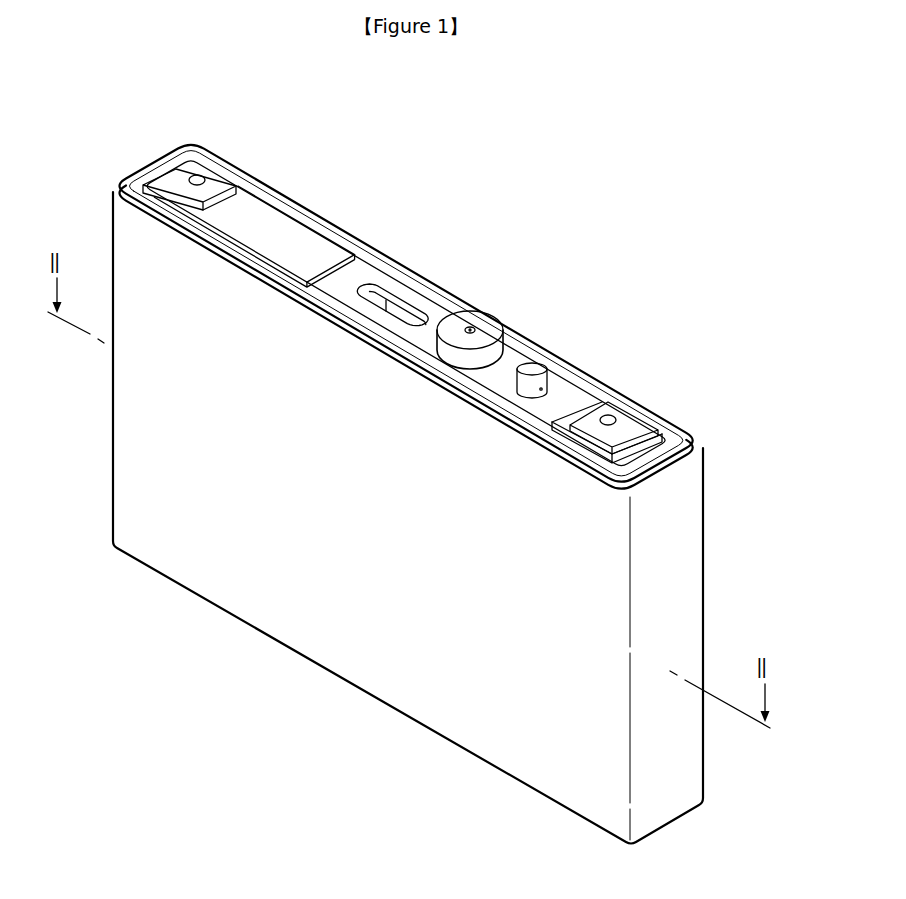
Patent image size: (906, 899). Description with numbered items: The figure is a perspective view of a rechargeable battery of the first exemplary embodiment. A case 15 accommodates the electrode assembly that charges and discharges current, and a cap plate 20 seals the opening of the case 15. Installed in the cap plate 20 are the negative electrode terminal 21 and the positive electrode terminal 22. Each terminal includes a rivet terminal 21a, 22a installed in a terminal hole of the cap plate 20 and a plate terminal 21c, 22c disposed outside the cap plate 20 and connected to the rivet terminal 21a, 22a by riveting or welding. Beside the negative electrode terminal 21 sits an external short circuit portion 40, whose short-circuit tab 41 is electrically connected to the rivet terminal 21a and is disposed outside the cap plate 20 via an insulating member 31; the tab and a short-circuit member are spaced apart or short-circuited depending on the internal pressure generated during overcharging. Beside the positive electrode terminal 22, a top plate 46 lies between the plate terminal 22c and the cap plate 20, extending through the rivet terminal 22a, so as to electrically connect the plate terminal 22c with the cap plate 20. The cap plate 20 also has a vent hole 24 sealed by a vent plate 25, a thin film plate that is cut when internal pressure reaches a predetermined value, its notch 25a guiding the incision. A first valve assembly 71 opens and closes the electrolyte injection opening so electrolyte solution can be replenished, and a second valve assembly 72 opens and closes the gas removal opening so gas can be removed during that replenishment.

The case 15 is at (327, 637).
The cap plate 20 is at (355, 272).
The negative electrode terminal 21 is at (207, 164).
The rivet terminal 21a is at (192, 176).
The plate terminal 21c is at (221, 179).
The positive electrode terminal 22 is at (608, 407).
The rivet terminal 22a is at (616, 418).
The plate terminal 22c is at (624, 428).
The vent hole 24 is at (441, 278).
The vent plate 25 is at (404, 308).
The notch 25a is at (392, 304).
The insulating member 31 is at (267, 202).
The external short circuit portion 40 is at (310, 215).
The short-circuit tab 41 is at (323, 248).
The top plate 46 is at (628, 453).
The first valve assembly 71 is at (500, 315).
The second valve assembly 72 is at (545, 362).